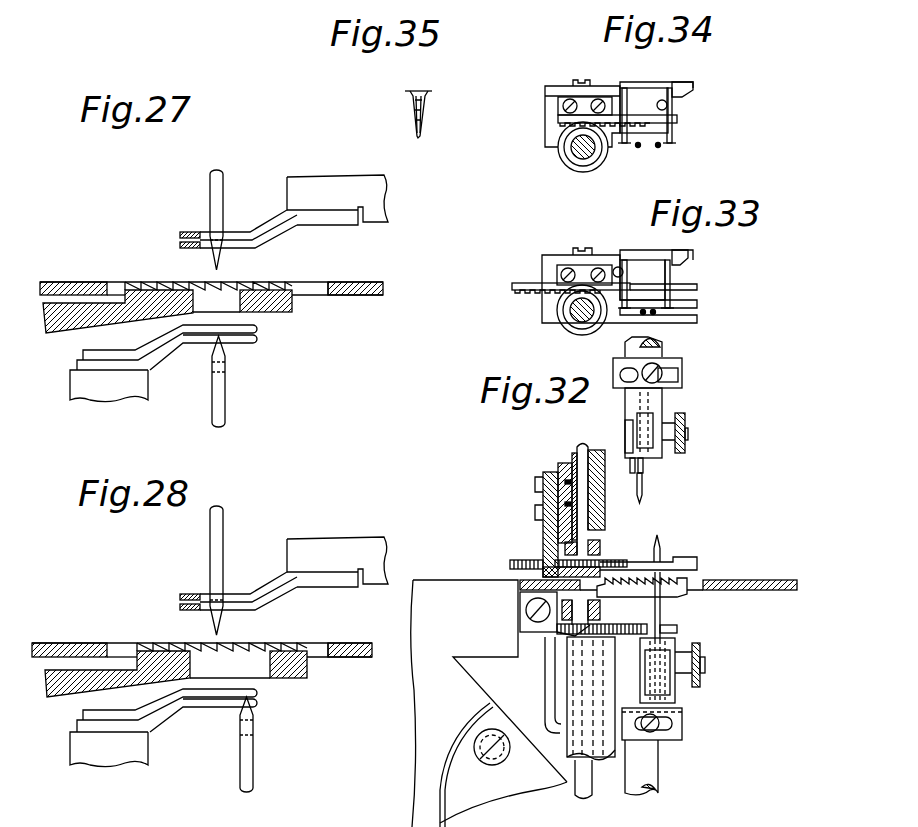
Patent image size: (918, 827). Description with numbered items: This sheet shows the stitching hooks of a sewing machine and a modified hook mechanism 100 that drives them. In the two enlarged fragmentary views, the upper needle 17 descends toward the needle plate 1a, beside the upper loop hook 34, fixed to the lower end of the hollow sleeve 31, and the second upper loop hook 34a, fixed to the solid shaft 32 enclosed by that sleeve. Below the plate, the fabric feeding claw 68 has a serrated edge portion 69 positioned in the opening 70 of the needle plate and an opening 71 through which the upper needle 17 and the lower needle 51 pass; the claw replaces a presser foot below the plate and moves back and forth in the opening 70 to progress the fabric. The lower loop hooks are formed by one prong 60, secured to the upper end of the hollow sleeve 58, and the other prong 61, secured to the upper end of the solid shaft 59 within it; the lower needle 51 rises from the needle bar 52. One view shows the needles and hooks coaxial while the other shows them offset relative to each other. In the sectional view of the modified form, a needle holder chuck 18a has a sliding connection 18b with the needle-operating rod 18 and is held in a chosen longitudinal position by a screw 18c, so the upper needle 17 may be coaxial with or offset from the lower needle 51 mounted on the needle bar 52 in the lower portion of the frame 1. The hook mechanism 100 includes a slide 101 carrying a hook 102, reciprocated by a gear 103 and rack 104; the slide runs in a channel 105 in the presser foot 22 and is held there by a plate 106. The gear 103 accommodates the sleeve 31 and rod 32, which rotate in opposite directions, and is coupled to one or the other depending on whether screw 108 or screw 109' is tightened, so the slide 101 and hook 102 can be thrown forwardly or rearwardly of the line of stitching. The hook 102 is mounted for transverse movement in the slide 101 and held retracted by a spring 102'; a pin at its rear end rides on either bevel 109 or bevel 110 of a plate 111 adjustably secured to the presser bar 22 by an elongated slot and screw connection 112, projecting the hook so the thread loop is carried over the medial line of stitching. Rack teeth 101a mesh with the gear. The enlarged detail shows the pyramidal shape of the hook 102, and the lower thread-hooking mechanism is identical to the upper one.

In FIG. 32, the machine frame 1 is at (441, 584).
In FIG. 27, the needle plate 1a is at (87, 281).
In FIG. 28, the needle plate 1a is at (70, 643).
In FIG. 32, the needle plate 1a is at (767, 580).
In FIG. 27, the upper needle 17 is at (209, 184).
In FIG. 28, the upper needle 17 is at (218, 530).
In FIG. 34, the upper needle 17 is at (638, 148).
In FIG. 32, the upper needle 17 is at (644, 482).
In FIG. 32, the needle bar 18 is at (650, 347).
In FIG. 32, the needle holder chuck 18a is at (655, 402).
In FIG. 32, the sliding connection 18b is at (682, 373).
In FIG. 32, the screw 18c is at (648, 371).
In FIG. 33, the presser foot 22 is at (545, 318).
In FIG. 32, the presser foot 22 is at (688, 560).
In FIG. 33, the hollow sleeve 31 is at (580, 323).
In FIG. 33, the solid shaft 32 is at (572, 318).
In FIG. 27, the upper loop hook 34 is at (272, 220).
In FIG. 28, the upper loop hook 34 is at (277, 583).
In FIG. 27, the second upper loop hook 34a is at (276, 238).
In FIG. 28, the second upper loop hook 34a is at (280, 596).
In FIG. 27, the lower needle 51 is at (224, 380).
In FIG. 28, the lower needle 51 is at (253, 742).
In FIG. 34, the lower needle 51 is at (658, 148).
In FIG. 32, the lower needle 51 is at (661, 542).
In FIG. 32, the needle bar 52 is at (650, 772).
In FIG. 32, the hollow sleeve 58 is at (582, 772).
In FIG. 32, the solid shaft 59 is at (578, 798).
In FIG. 27, the prong 60 is at (157, 356).
In FIG. 28, the prong 60 is at (158, 714).
In FIG. 27, the prong 61 is at (150, 342).
In FIG. 28, the prong 61 is at (147, 703).
In FIG. 27, the fabric feeding claw 68 is at (286, 312).
In FIG. 28, the fabric feeding claw 68 is at (306, 667).
In FIG. 32, the fabric feeding claw 68 is at (677, 600).
In FIG. 27, the serrated edge portion 69 is at (170, 281).
In FIG. 28, the serrated edge portion 69 is at (177, 643).
In FIG. 27, the opening 70 is at (320, 282).
In FIG. 28, the opening 70 is at (323, 643).
In FIG. 32, the opening 70 is at (703, 580).
In FIG. 27, the opening 71 is at (240, 312).
In FIG. 28, the opening 71 is at (260, 675).
In FIG. 34, the hook mechanism 100 is at (683, 128).
In FIG. 33, the hook mechanism 100 is at (678, 273).
In FIG. 32, the hook mechanism 100 is at (617, 550).
In FIG. 33, the slide 101 is at (690, 287).
In FIG. 34, the rack teeth 101a is at (677, 118).
In FIG. 35, the hook 102 is at (437, 101).
In FIG. 34, the hook 102 is at (689, 153).
In FIG. 33, the hook 102 is at (609, 329).
In FIG. 32, the hook 102 is at (637, 588).
In FIG. 34, the spring 102' is at (694, 99).
In FIG. 33, the spring 102' is at (642, 253).
In FIG. 34, the gear 103 is at (587, 158).
In FIG. 33, the gear 103 is at (583, 323).
In FIG. 32, the gear 103 is at (540, 636).
In FIG. 34, the rack 104 is at (560, 119).
In FIG. 33, the rack 104 is at (512, 287).
In FIG. 32, the rack 104 is at (510, 564).
In FIG. 34, the channel 105 is at (552, 110).
In FIG. 33, the channel 105 is at (550, 277).
In FIG. 34, the plate 106 is at (560, 97).
In FIG. 33, the plate 106 is at (560, 265).
In FIG. 32, the screw 108 is at (602, 548).
In FIG. 34, the bevel 109 is at (697, 78).
In FIG. 33, the bevel 109 is at (699, 247).
In FIG. 32, the bevel 109 is at (518, 610).
In FIG. 32, the screw 109' is at (551, 511).
In FIG. 34, the bevel 110 is at (621, 85).
In FIG. 33, the bevel 110 is at (621, 253).
In FIG. 34, the plate 111 is at (657, 91).
In FIG. 33, the plate 111 is at (643, 279).
In FIG. 34, the slot and screw connection 112 is at (595, 80).
In FIG. 33, the slot and screw connection 112 is at (597, 233).